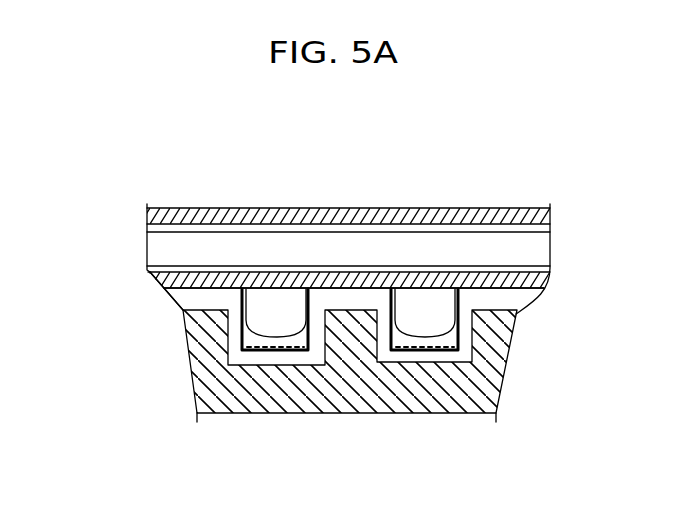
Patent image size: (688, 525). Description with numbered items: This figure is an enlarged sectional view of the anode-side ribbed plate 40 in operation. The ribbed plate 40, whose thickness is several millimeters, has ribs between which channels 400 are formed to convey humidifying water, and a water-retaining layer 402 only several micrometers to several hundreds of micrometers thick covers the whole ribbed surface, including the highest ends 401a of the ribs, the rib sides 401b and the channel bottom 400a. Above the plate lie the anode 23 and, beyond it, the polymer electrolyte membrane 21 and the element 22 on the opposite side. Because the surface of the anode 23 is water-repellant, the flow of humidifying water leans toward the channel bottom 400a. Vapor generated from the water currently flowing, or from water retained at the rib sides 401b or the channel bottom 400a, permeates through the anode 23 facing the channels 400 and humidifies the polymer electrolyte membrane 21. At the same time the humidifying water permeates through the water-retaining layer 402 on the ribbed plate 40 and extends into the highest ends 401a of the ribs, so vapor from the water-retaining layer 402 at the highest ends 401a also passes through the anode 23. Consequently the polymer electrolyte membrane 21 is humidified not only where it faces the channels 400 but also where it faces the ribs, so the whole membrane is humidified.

The upper electrode / cover layer 22 is at (519, 208).
The polymer electrolyte membrane 21 is at (527, 248).
The anode 23 is at (538, 278).
The highest ends 401a is at (205, 312).
The water-retaining layer 402 is at (197, 298).
The ribbed plate 40 is at (452, 420).
The rib sides 401b is at (466, 338).
The channels 400 is at (421, 314).
The channel bottom 400a is at (267, 360).